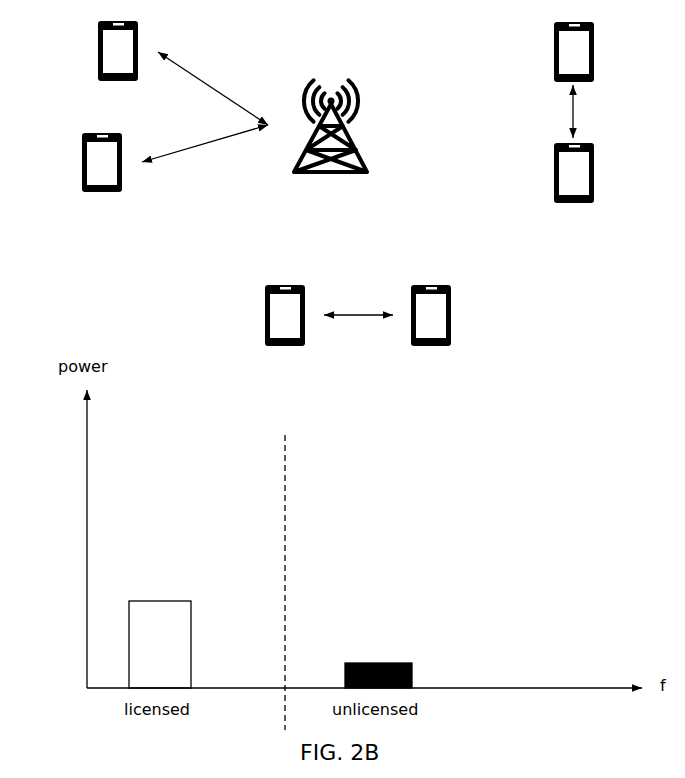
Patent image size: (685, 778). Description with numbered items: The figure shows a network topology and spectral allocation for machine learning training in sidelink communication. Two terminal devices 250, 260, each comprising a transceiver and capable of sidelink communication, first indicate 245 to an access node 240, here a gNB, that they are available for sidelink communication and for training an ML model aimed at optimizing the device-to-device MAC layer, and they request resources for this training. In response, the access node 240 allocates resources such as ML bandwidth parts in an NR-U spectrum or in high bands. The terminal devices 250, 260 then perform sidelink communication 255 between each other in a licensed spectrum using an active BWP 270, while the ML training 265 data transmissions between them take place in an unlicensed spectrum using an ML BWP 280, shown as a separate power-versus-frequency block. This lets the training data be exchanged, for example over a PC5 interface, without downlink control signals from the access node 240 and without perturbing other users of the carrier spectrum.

The access node 240 is at (330, 142).
The indication to access node 245 is at (205, 117).
The terminal device 250 is at (347, 183).
The sidelink communication 255 is at (595, 111).
The terminal device 260 is at (334, 239).
The training link between UEs 265 is at (358, 315).
The active BWP 270 is at (193, 646).
The ML BWP 280 is at (415, 675).